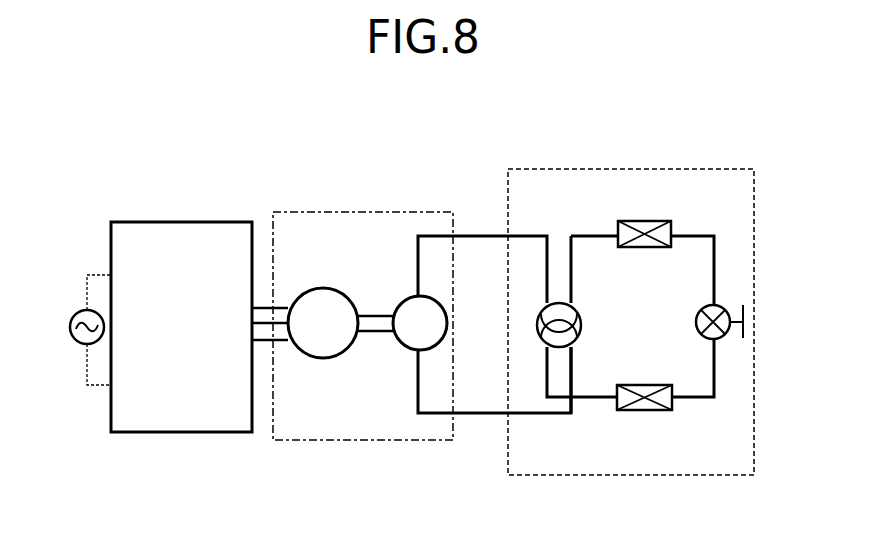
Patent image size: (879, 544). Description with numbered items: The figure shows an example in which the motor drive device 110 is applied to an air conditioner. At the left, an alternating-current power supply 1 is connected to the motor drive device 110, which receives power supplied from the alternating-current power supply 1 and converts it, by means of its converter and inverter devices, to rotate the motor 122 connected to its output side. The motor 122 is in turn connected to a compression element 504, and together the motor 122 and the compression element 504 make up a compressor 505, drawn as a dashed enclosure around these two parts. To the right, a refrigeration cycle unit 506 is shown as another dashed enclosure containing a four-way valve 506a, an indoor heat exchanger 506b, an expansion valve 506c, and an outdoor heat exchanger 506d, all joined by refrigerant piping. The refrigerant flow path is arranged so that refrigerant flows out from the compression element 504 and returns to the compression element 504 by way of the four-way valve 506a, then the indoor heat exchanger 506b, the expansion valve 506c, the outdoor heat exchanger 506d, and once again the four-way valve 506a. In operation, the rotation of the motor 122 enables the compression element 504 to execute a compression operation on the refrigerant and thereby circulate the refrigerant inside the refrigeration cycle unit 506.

The alternating-current power supply 1 is at (74, 313).
The motor drive device 110 is at (206, 222).
The motor 122 is at (325, 358).
The compression element 504 is at (410, 297).
The compressor 505 is at (410, 212).
The refrigeration cycle unit 506 is at (722, 169).
The four-way valve 506a is at (578, 320).
The indoor heat exchanger 506b is at (646, 221).
The expansion valve 506c is at (722, 308).
The outdoor heat exchanger 506d is at (645, 410).